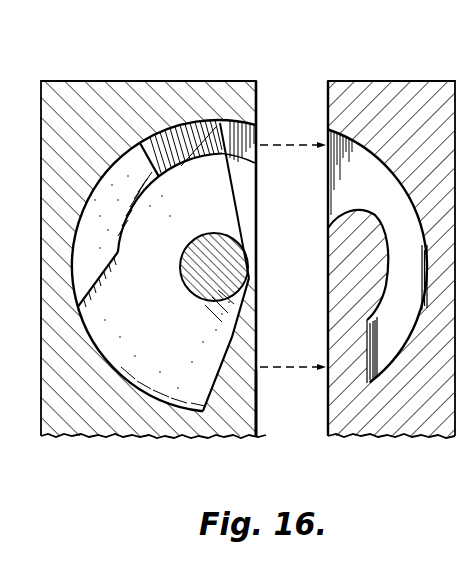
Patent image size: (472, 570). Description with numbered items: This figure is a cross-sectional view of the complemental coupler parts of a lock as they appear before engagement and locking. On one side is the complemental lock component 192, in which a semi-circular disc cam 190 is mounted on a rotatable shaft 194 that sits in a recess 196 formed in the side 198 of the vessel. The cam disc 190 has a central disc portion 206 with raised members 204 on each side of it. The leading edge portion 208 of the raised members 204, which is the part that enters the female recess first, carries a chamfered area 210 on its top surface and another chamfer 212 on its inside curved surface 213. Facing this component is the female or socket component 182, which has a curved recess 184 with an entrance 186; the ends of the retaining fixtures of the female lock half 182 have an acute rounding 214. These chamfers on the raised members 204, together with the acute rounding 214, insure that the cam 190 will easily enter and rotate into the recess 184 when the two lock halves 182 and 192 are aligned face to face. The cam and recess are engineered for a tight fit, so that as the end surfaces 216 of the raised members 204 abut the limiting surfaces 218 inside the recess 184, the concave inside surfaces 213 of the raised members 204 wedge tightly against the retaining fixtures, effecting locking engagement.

The female or socket component 182 is at (394, 122).
The curved recess 184 is at (410, 262).
The entrance 186 is at (330, 131).
The semi-circular disc cam 190 is at (247, 217).
The complemental lock component 192 is at (224, 443).
The rotatable shaft 194 is at (249, 272).
The recess 196 is at (246, 327).
The side of the vessel 198 is at (258, 383).
The raised members 204 is at (118, 261).
The central disc portion 206 is at (166, 345).
The leading edge portion 208 is at (259, 106).
The chamfered area 210 is at (178, 140).
The chamfer 212 is at (178, 188).
The inside curved surface 213 is at (104, 239).
The acute rounding 214 is at (362, 208).
The end surfaces 216 is at (240, 160).
The limiting surfaces 218 is at (360, 237).